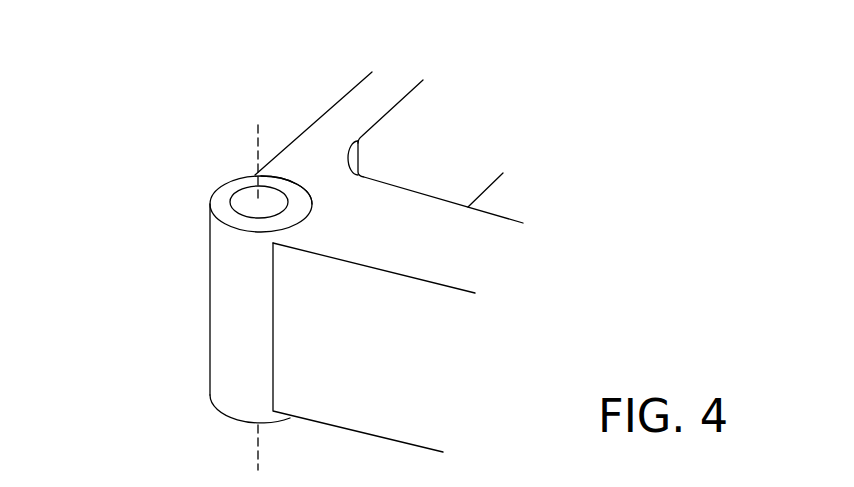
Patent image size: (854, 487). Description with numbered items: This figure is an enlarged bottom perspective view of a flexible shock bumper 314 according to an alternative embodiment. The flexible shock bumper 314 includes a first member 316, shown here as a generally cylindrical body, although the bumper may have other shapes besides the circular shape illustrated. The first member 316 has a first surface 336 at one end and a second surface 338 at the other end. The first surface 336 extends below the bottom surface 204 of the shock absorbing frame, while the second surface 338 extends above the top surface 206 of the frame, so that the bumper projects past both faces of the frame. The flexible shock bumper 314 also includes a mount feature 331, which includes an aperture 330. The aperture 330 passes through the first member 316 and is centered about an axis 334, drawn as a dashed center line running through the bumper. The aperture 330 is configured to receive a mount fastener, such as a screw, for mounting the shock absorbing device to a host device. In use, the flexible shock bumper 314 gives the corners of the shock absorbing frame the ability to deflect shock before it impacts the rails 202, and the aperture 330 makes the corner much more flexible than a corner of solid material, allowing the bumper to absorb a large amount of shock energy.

The rail 202 is at (358, 85).
The bottom surface 204 is at (335, 123).
The top surface 206 is at (350, 430).
The flexible shock bumper 314 is at (156, 331).
The first member 316 is at (222, 258).
The aperture 330 is at (288, 208).
The mount feature 331 is at (292, 180).
The axis 334 is at (262, 125).
The first surface 336 is at (230, 192).
The second surface 338 is at (222, 417).